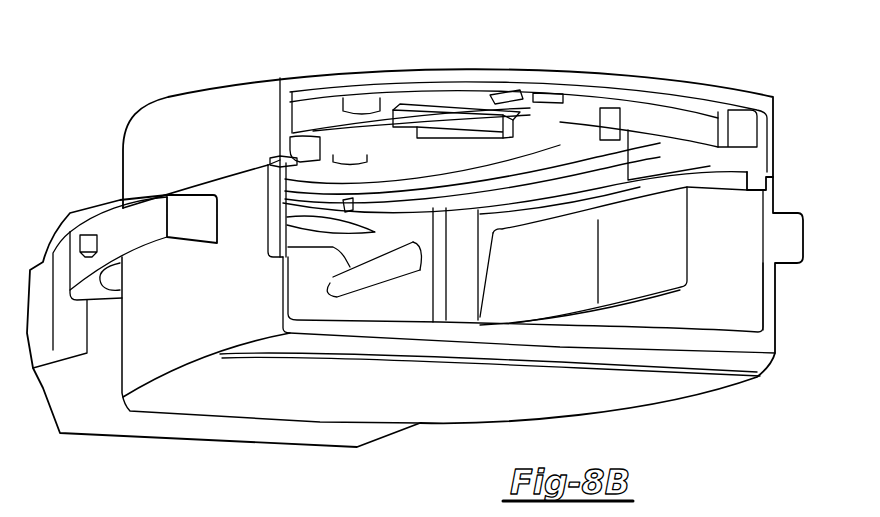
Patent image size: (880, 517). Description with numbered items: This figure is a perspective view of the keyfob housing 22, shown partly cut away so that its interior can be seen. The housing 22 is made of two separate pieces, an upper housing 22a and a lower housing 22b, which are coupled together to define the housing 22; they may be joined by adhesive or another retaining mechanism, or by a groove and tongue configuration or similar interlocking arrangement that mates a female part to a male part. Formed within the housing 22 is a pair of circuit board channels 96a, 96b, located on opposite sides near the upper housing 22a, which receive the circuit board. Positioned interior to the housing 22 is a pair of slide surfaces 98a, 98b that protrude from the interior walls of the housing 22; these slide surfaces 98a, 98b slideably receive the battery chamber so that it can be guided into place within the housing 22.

The housing 22 is at (613, 52).
The upper housing 22a is at (204, 92).
The lower housing 22b is at (667, 393).
The circuit board channel 96a is at (737, 160).
The circuit board channel 96b is at (278, 161).
The slide surface 98a is at (640, 240).
The slide surface 98b is at (302, 288).